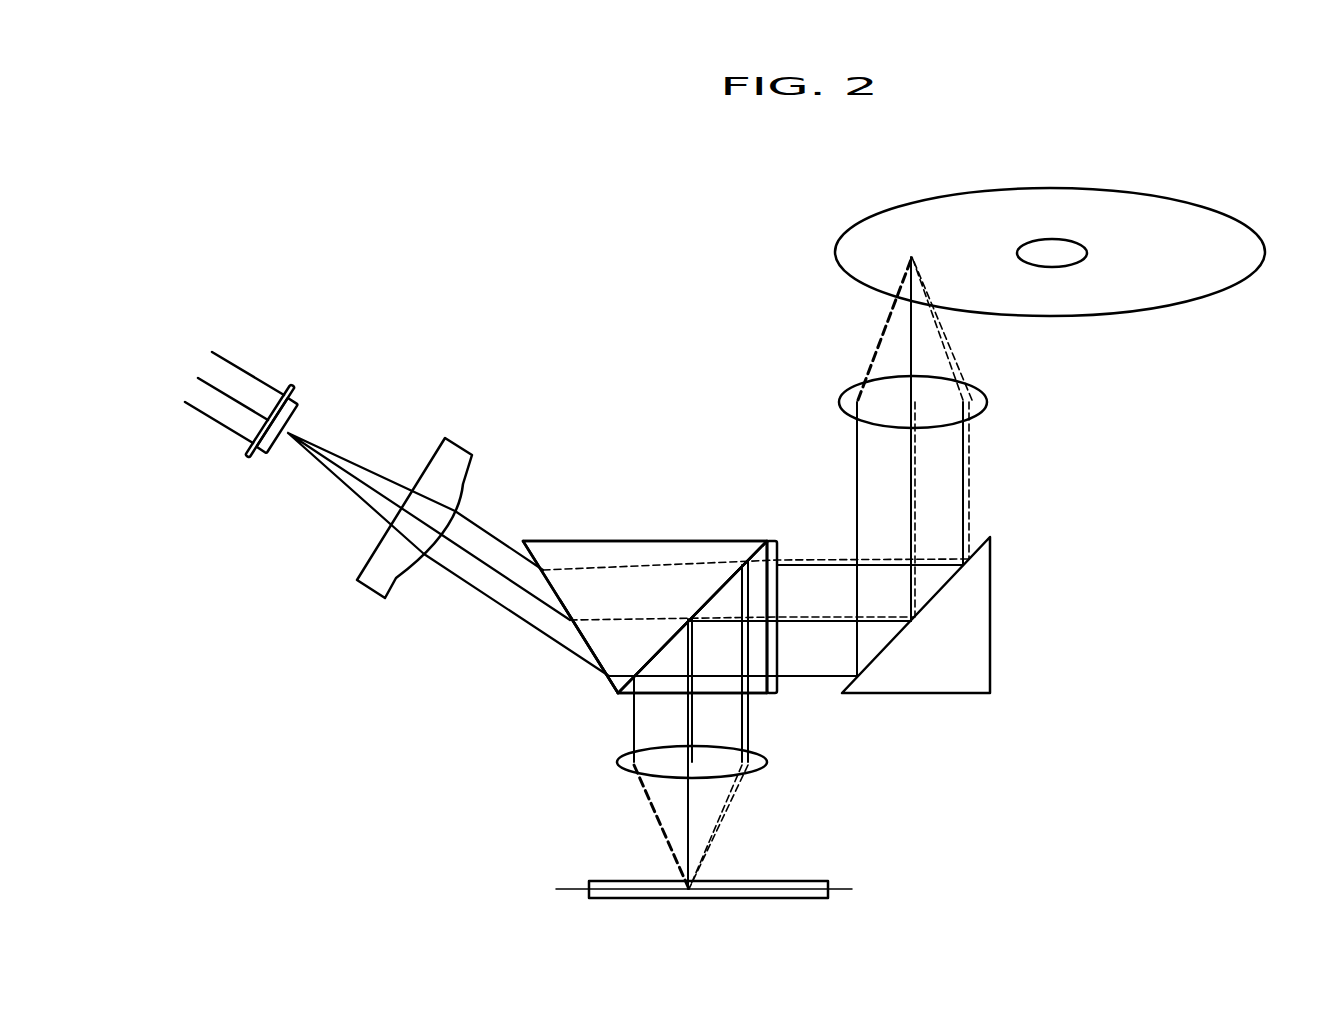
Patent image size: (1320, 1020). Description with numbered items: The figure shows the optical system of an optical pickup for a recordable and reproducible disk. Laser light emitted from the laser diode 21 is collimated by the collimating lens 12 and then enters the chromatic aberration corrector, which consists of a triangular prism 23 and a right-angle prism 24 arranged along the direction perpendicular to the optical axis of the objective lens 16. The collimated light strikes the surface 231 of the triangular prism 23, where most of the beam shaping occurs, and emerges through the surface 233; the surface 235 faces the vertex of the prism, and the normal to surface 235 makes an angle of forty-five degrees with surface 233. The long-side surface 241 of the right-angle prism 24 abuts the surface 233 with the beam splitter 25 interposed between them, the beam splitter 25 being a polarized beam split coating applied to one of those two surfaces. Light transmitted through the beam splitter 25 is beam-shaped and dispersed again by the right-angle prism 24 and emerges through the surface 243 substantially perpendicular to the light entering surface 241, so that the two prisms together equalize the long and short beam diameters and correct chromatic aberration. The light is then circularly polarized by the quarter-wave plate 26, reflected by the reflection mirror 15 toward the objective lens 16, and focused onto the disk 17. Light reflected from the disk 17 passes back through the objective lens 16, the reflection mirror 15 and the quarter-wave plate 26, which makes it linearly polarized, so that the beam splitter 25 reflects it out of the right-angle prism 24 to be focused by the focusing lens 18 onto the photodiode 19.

The collimating lens 12 is at (464, 448).
The reflection mirror 15 is at (993, 598).
The objective lens 16 is at (845, 402).
The reproducible/recordable disk 17 is at (1226, 201).
The focusing lens 18 is at (633, 770).
The photodiode 19 is at (830, 888).
The laser diode 21 is at (294, 402).
The triangular prism 23 is at (624, 541).
The surface 231 is at (568, 620).
The surface 233 is at (605, 660).
The surface 235 is at (558, 541).
The right-angle prism 24 is at (757, 695).
The long-side surface 241 is at (634, 693).
The surface 243 is at (768, 585).
The beam splitter 25 is at (714, 595).
The quarter-wave plate 26 is at (772, 541).